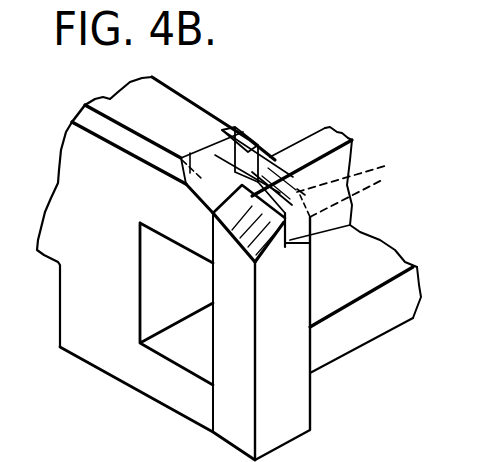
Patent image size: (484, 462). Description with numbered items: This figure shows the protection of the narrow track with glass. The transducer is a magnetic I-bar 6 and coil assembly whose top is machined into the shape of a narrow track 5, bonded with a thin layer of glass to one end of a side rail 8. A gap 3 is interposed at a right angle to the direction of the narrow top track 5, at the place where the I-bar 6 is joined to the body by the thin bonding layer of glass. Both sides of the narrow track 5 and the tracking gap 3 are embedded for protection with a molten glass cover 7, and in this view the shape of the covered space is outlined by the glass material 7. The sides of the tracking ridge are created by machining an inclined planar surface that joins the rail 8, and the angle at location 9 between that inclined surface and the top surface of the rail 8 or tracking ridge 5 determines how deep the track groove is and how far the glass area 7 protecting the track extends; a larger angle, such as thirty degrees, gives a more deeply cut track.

The gap 3 is at (236, 182).
The narrow track 5 is at (297, 233).
The magnetic I-bar 6 is at (293, 412).
The molten glass cover 7 is at (350, 185).
The side rail 8 is at (110, 99).
The location of the angle 9 is at (197, 184).